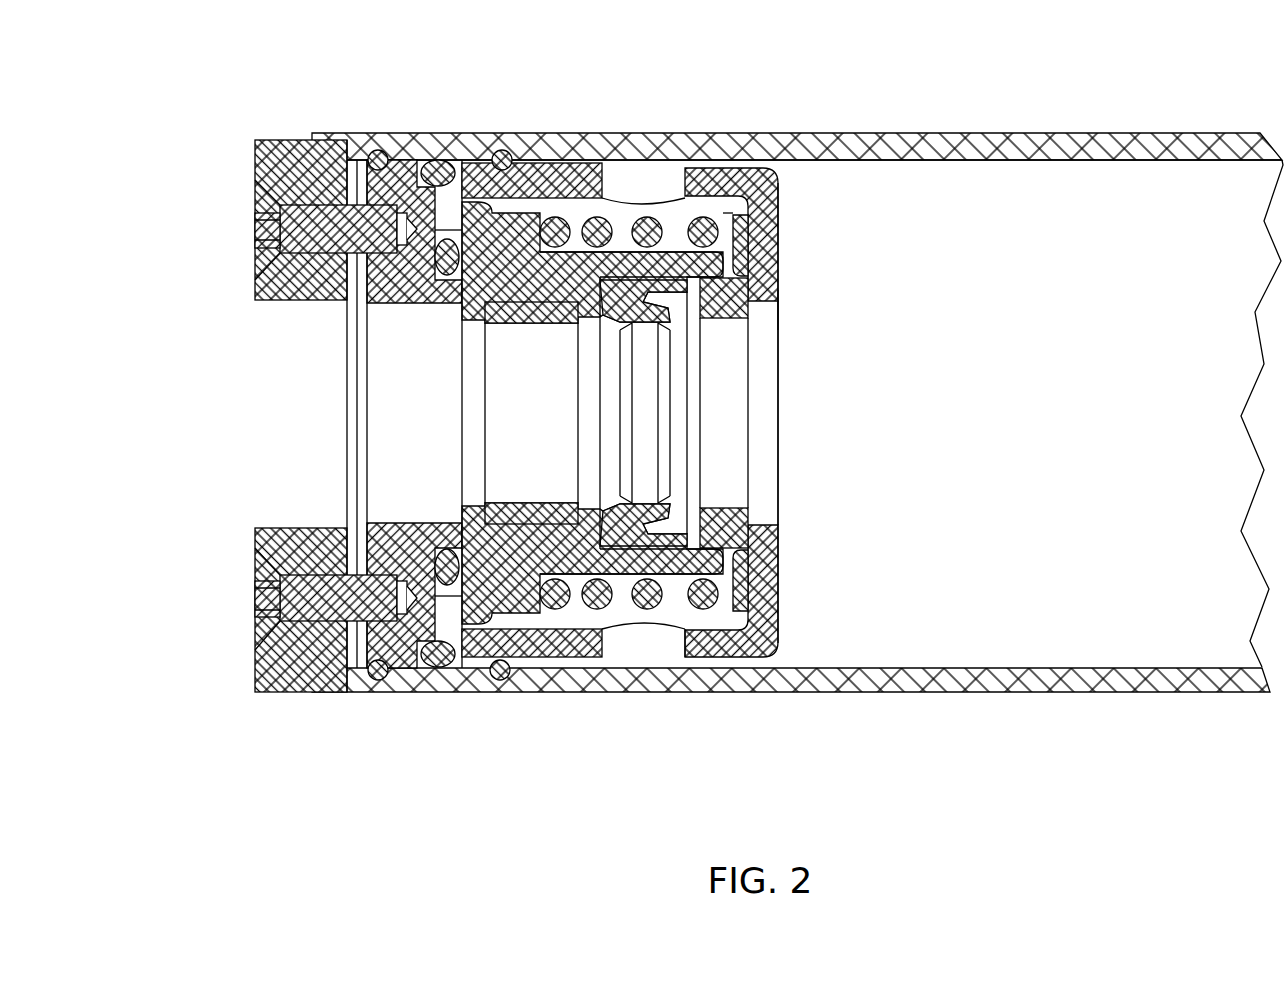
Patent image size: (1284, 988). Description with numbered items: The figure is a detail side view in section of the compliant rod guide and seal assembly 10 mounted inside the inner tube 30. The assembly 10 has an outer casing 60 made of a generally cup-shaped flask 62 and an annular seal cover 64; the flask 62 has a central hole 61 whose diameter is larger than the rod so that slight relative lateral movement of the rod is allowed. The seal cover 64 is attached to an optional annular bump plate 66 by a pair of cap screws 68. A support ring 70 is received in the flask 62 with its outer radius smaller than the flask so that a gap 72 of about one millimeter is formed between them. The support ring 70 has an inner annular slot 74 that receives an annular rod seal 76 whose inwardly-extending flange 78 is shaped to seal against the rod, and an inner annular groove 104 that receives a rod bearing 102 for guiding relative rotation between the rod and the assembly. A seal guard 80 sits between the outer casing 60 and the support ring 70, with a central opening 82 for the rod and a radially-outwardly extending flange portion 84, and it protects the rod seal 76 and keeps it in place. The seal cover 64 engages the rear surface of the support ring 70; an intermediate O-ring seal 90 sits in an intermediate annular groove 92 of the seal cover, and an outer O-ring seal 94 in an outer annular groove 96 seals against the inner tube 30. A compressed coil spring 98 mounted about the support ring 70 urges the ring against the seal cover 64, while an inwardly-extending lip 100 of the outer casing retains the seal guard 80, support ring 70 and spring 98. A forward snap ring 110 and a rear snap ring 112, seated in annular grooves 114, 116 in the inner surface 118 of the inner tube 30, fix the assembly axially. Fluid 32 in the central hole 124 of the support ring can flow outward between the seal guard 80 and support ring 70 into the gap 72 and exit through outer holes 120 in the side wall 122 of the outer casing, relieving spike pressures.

The rod guide and seal assembly 10 is at (190, 114).
The inner tube 30 is at (980, 133).
The fluid 32 is at (1130, 668).
The outer casing 60 is at (778, 640).
The central hole 61 is at (776, 315).
The flask 62 is at (596, 692).
The seal cover 64 is at (398, 695).
The bump plate 66 is at (285, 692).
The cap screws 68 is at (262, 272).
The support ring 70 is at (530, 658).
The gap 72 is at (683, 212).
The inner annular slot 74 is at (598, 515).
The rod seal 76 is at (628, 275).
The inwardly-extending flange 78 is at (672, 318).
The seal guard 80 is at (780, 274).
The central opening 82 is at (718, 506).
The flange portion 84 is at (780, 232).
The intermediate seal 90 is at (446, 282).
The intermediate annular groove 92 is at (440, 546).
The outer seal 94 is at (432, 160).
The outer annular groove 96 is at (440, 680).
The coil spring 98 is at (752, 212).
The inwardly-extending lip 100 is at (776, 556).
The rod bearing 102 is at (556, 326).
The inner annular groove 104 is at (504, 323).
The forward snap ring 110 is at (498, 690).
The rear snap ring 112 is at (375, 693).
The annular groove 114 is at (497, 150).
The annular groove 116 is at (372, 150).
The inner surface 118 is at (1100, 160).
The outer holes 120 is at (640, 182).
The side wall 122 is at (718, 660).
The central hole 124 is at (490, 418).